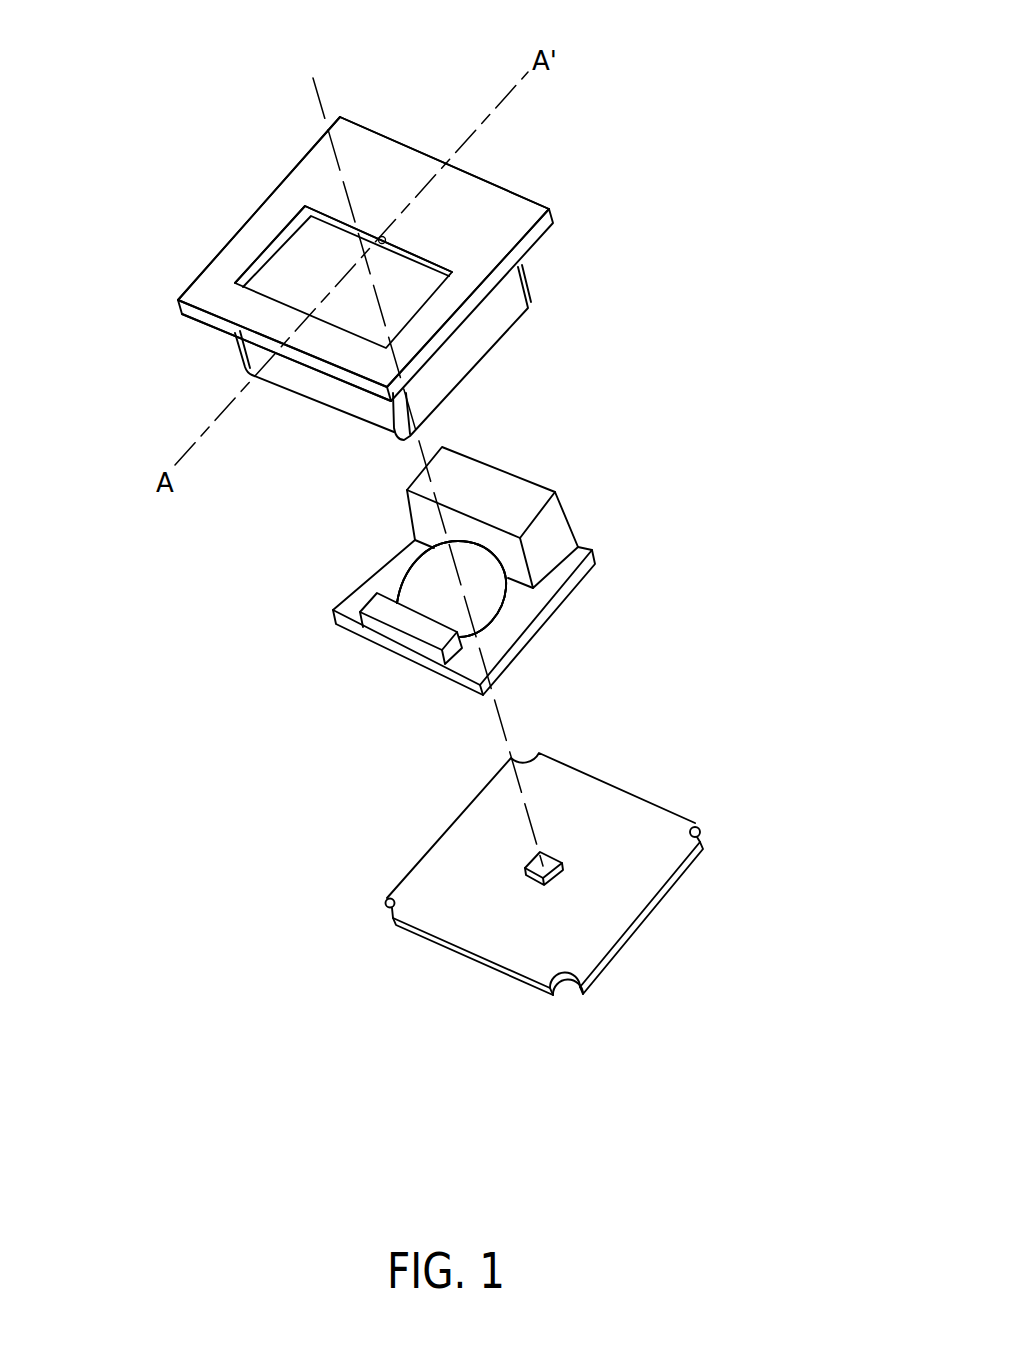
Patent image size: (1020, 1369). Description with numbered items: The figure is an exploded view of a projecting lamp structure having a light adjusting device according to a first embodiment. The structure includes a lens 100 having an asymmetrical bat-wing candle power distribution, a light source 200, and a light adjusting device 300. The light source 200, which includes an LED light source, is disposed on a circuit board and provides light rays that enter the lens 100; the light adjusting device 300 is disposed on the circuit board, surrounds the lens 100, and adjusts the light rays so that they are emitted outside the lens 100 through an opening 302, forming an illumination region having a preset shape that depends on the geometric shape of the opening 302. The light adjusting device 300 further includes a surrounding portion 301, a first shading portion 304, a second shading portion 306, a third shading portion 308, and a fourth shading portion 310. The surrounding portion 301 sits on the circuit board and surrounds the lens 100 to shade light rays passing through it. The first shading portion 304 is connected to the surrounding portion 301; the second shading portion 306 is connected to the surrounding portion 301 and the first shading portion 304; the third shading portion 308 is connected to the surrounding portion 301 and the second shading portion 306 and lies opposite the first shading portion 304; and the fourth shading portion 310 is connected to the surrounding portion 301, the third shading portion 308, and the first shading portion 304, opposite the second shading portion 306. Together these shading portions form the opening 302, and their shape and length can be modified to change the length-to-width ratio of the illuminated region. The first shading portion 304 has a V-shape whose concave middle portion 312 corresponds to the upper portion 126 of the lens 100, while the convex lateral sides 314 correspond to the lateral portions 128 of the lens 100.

The lens 100 is at (656, 511).
The upper portion of the lens 126 is at (470, 550).
The lateral portions of the lens 128 is at (440, 547).
The light source 200 is at (711, 773).
The light adjusting device 300 is at (555, 122).
The surrounding portion 301 is at (517, 298).
The opening 302 is at (352, 308).
The first shading portion 304 is at (375, 180).
The second shading portion 306 is at (256, 235).
The third shading portion 308 is at (262, 306).
The fourth shading portion 310 is at (433, 320).
The middle portion of the V-shape 312 is at (392, 229).
The lateral sides of the V-shape 314 is at (320, 202).